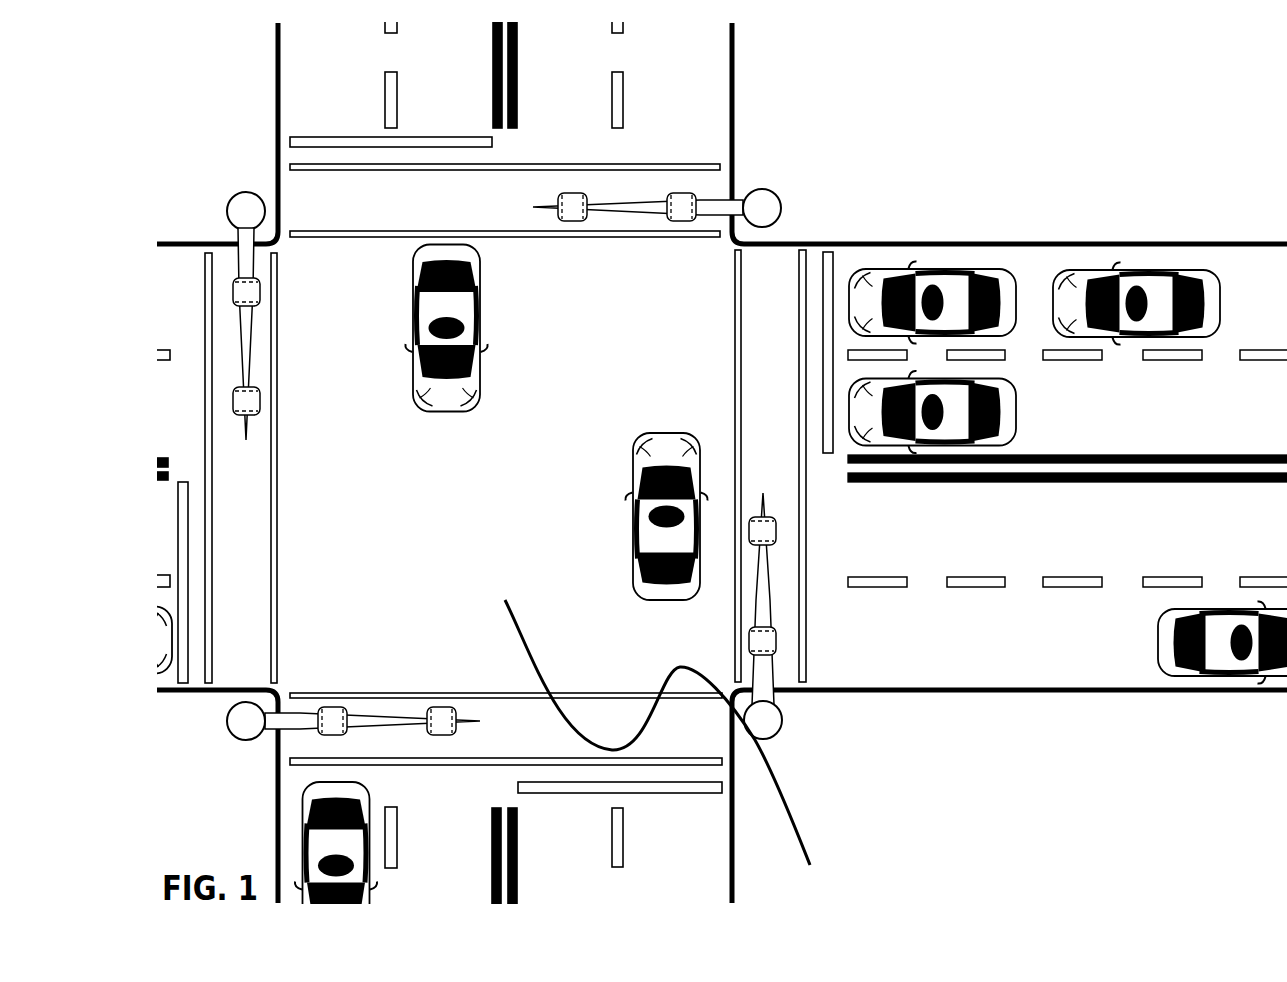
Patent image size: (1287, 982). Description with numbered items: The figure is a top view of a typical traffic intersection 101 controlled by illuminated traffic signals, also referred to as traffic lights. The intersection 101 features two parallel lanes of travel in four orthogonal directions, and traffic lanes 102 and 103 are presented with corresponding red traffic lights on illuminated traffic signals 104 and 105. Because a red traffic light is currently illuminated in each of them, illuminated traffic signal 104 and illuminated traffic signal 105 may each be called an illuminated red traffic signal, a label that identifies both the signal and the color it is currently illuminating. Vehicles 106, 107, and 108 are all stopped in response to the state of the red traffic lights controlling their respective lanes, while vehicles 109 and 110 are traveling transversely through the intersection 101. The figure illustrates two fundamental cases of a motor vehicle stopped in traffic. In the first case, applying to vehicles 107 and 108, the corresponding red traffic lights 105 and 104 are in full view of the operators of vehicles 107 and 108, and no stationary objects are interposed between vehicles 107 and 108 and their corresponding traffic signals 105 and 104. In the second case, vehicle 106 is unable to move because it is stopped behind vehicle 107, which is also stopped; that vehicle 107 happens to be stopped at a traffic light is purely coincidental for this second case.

The traffic intersection 101 is at (667, 744).
The traffic lane 102 is at (1230, 415).
The traffic lane 103 is at (1247, 282).
The illuminated traffic signal 104 is at (257, 401).
The illuminated traffic signal 105 is at (257, 294).
The vehicle 106 is at (1168, 272).
The vehicle 107 is at (968, 272).
The vehicle 108 is at (1015, 418).
The vehicle 109 is at (477, 323).
The vehicle 110 is at (634, 478).